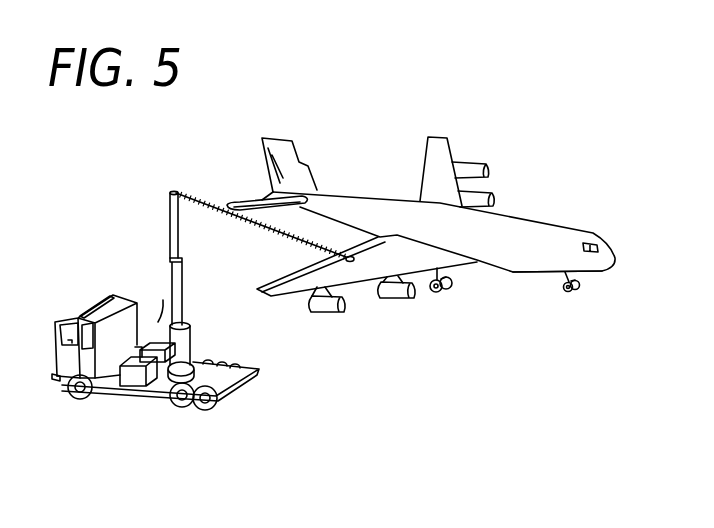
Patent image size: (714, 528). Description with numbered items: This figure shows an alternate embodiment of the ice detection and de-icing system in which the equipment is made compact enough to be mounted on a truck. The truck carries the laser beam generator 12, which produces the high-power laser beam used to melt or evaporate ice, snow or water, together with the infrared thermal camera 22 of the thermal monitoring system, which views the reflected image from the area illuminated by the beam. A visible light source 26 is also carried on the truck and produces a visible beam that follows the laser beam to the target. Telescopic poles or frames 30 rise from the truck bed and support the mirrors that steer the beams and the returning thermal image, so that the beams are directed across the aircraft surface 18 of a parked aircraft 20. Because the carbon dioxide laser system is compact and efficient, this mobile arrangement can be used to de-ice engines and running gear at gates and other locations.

The laser beam generator 12 is at (135, 345).
The aircraft surface 18 is at (529, 248).
The aircraft 20 is at (552, 217).
The infrared thermal camera 22 is at (138, 380).
The visible light source 26 is at (163, 300).
The telescopic poles or frames 30 is at (170, 238).